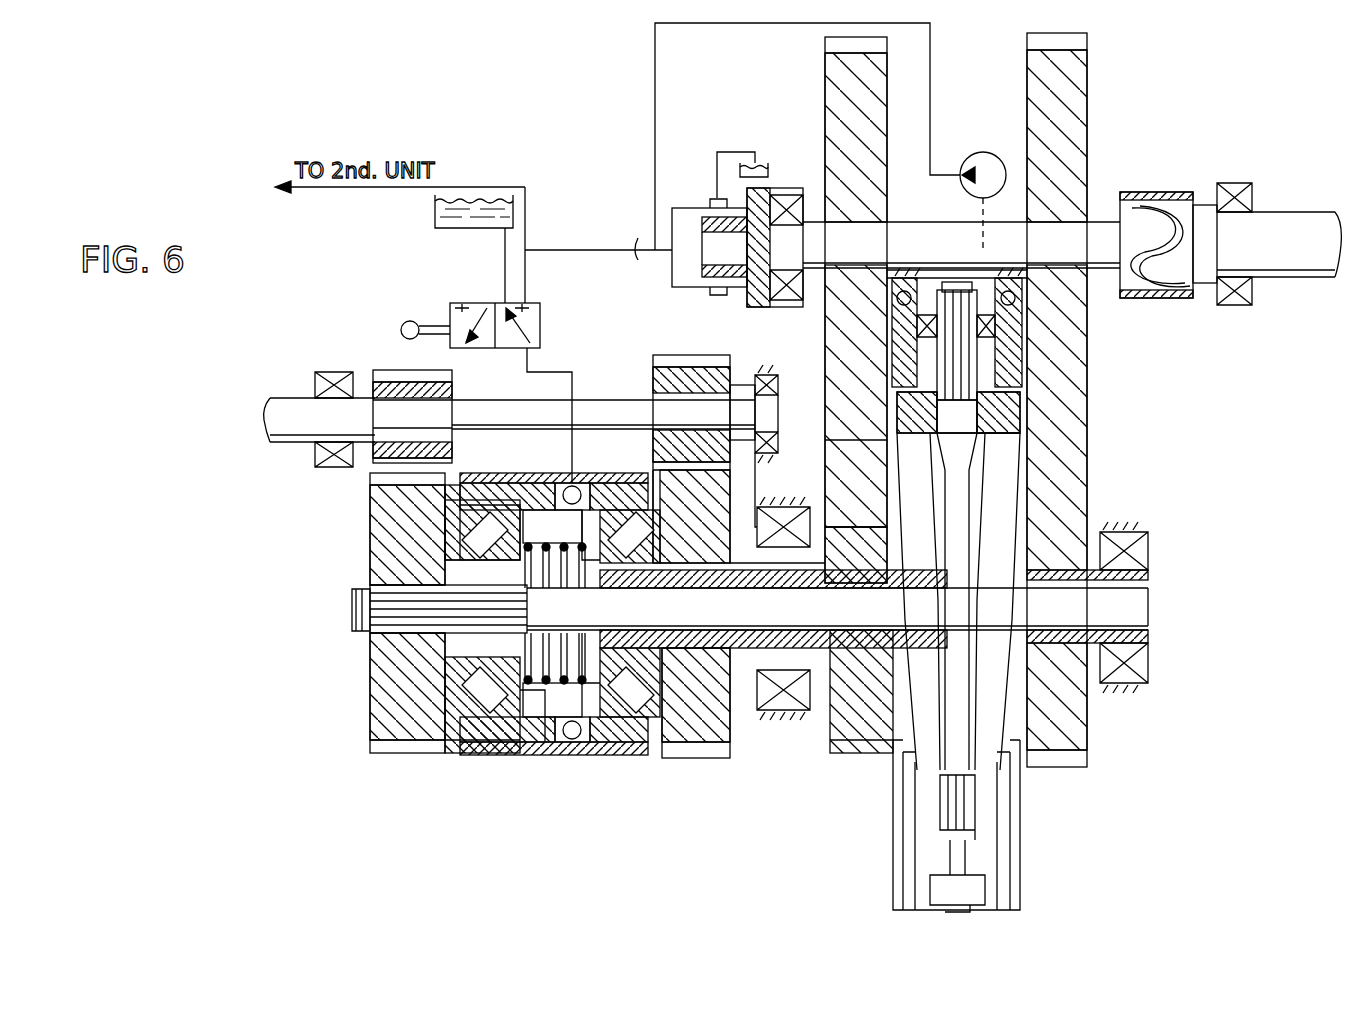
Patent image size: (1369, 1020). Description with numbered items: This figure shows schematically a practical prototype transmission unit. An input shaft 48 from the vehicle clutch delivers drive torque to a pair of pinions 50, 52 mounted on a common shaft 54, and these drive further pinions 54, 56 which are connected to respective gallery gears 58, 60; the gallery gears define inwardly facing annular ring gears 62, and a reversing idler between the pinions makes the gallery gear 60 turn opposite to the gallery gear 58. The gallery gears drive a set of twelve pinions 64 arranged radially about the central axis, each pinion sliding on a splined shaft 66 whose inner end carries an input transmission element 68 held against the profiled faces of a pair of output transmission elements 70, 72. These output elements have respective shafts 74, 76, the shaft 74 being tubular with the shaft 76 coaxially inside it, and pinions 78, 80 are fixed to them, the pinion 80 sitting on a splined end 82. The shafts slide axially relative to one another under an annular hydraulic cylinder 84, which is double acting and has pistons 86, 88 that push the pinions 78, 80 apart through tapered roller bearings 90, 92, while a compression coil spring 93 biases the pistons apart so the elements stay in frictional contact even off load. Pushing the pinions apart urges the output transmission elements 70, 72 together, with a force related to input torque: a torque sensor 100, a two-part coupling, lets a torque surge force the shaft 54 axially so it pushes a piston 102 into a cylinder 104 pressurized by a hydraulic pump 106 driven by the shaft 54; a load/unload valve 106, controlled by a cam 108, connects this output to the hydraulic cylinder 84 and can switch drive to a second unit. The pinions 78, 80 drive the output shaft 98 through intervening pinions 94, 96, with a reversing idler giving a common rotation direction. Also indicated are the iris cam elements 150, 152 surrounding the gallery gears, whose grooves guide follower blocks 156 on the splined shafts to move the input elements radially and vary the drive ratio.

The input shaft 48 is at (1294, 245).
The pinion 50 is at (1080, 126).
The pinion 52 is at (835, 80).
The common shaft 54 is at (960, 238).
The pinion 56 is at (827, 495).
The gallery gear 58 is at (905, 425).
The gallery gear 60 is at (778, 428).
The annular ring gear 62 is at (925, 397).
The pinion 64 is at (778, 397).
The splined shaft 66 is at (960, 365).
The input transmission element 68 is at (965, 453).
The output transmission element 70 is at (1010, 475).
The output transmission element 72 is at (1070, 503).
The shaft 74 is at (823, 678).
The shaft 76 is at (745, 610).
The pinion 78 is at (702, 745).
The pinion 80 is at (412, 744).
The splined end 82 is at (352, 608).
The annular hydraulic cylinder 84 is at (572, 488).
The piston 86 is at (628, 490).
The piston 88 is at (497, 486).
The tapered roller bearing 90 is at (640, 514).
The tapered roller bearing 92 is at (400, 520).
The compression coil spring 93 is at (533, 703).
The pinion 94 is at (662, 360).
The pinion 96 is at (400, 368).
The output shaft 98 is at (285, 410).
The torque sensor 100 is at (1146, 192).
The piston 102 is at (742, 288).
The cylinder 104 is at (672, 268).
The load/unload valve 106 is at (480, 305).
The cam 108 is at (405, 322).
The iris cam element 150 is at (903, 350).
The iris cam element 152 is at (995, 315).
The follower block 156 is at (935, 290).